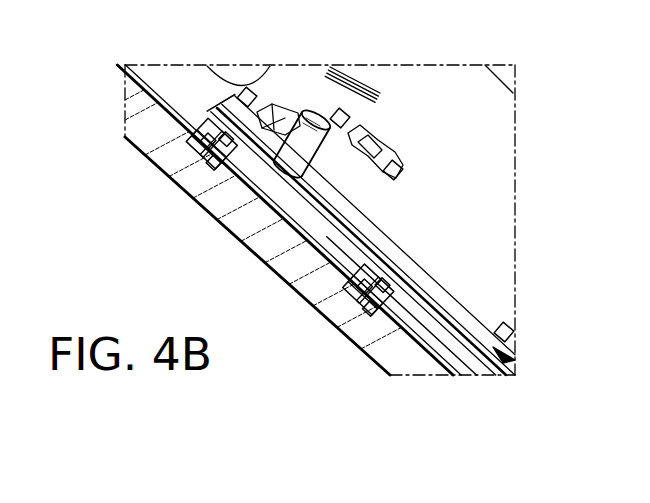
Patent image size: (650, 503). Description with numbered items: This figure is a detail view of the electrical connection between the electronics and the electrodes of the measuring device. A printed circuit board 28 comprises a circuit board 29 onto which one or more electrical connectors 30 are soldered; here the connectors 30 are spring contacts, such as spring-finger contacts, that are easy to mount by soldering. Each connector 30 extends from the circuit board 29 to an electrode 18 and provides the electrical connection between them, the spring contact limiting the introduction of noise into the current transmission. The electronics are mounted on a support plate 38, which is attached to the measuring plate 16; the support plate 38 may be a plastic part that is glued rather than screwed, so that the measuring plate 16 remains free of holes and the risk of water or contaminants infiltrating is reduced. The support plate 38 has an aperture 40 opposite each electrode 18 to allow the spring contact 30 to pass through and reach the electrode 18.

The measuring plate 16 is at (147, 123).
The electrode 18 is at (222, 182).
The printed circuit board 28 is at (380, 235).
The circuit board 29 is at (440, 313).
The electrical connector 30 is at (215, 160).
The support plate 38 is at (470, 147).
The aperture 40 is at (228, 200).